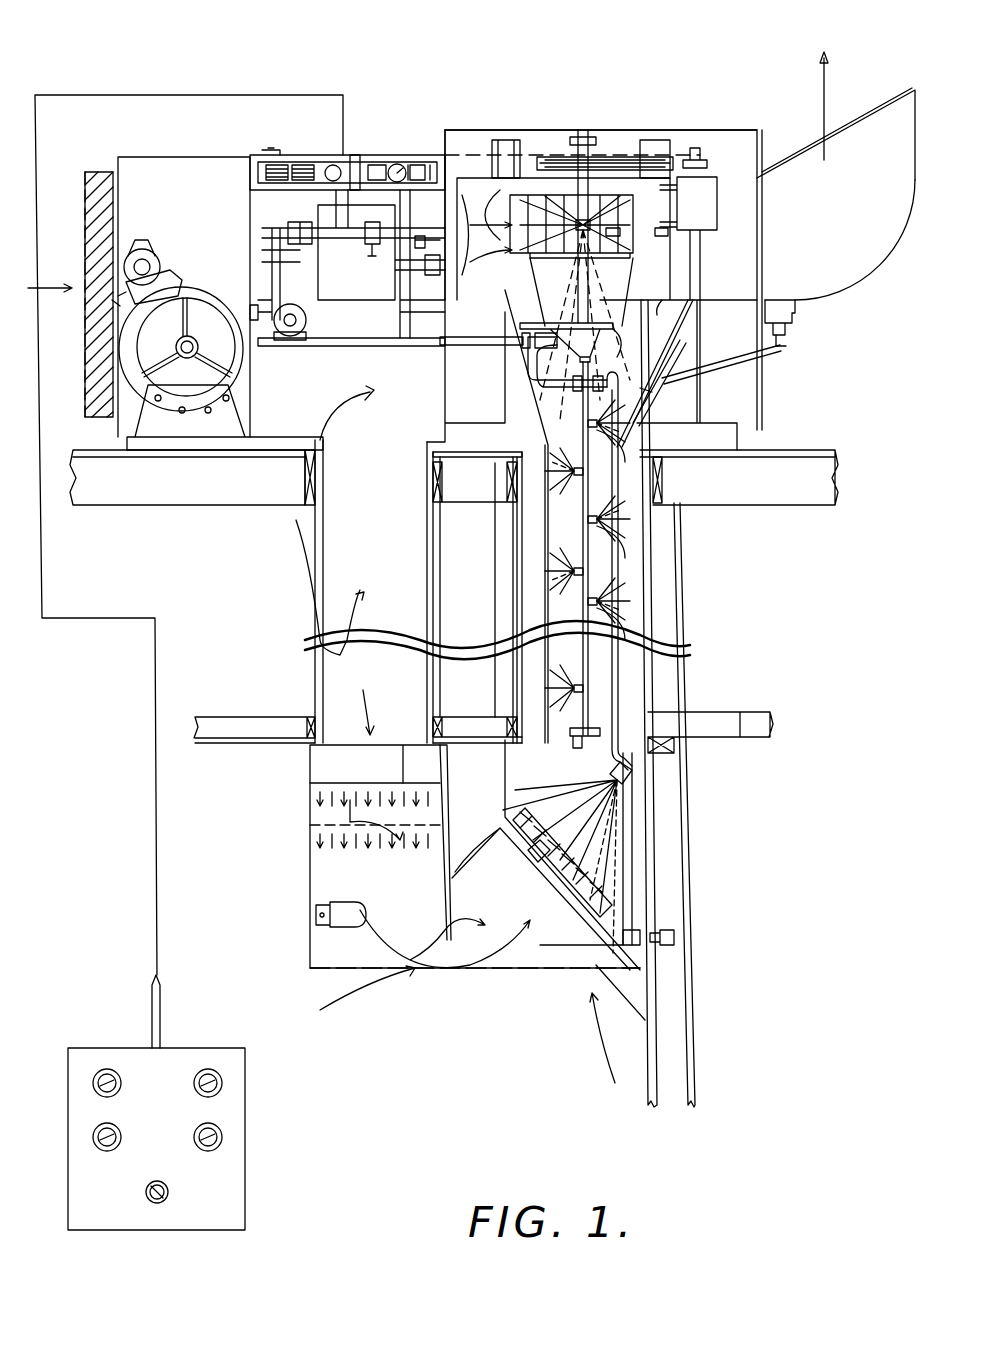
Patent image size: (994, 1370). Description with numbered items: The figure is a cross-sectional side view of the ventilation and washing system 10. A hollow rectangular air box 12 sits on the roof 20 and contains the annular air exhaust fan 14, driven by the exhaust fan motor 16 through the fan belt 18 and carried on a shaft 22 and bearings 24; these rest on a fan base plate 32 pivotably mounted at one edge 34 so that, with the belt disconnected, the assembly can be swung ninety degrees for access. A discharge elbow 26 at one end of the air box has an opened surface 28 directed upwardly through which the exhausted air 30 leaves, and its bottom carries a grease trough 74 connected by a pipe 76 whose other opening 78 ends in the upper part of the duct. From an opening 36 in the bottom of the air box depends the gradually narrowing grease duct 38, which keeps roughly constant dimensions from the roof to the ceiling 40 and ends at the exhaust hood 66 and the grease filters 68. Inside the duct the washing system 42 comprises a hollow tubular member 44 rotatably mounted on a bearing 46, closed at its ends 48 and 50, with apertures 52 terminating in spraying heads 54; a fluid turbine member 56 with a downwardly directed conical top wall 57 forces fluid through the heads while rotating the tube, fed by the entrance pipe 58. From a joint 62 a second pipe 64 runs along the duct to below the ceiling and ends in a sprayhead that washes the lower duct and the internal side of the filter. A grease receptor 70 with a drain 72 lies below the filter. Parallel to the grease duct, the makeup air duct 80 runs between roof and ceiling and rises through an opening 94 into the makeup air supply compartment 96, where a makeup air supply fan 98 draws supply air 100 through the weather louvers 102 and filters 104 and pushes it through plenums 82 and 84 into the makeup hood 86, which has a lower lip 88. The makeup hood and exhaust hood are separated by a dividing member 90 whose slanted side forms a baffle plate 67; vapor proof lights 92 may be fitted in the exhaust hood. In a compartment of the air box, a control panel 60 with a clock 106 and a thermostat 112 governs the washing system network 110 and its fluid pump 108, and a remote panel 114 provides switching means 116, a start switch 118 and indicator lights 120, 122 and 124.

The ventilation and washing system 10 is at (542, 60).
The air box 12 is at (688, 128).
The air exhaust fan 14 is at (487, 236).
The exhaust fan motor 16 is at (702, 222).
The fan belt 18 is at (644, 165).
The roof 20 is at (112, 455).
The shaft 22 is at (548, 156).
The bearings 24 is at (588, 145).
The discharge elbow 26 is at (912, 262).
The opened surface 28 is at (862, 108).
The exhausted air 30 is at (824, 72).
The fan base plate 32 is at (516, 160).
The edge 34 is at (480, 170).
The opening 36 is at (700, 332).
The grease duct 38 is at (530, 406).
The ceiling 40 is at (215, 740).
The washing system 42 is at (588, 308).
The hollow tubular member 44 is at (577, 450).
The bearing 46 is at (600, 730).
The end 48 is at (600, 775).
The end 50 is at (598, 218).
The apertures 52 is at (612, 532).
The spraying heads 54 is at (612, 232).
The fluid turbine member 56 is at (522, 378).
The conical top wall 57 is at (616, 326).
The entrance pipe 58 is at (470, 338).
The control panel 60 is at (275, 155).
The joint 62 is at (550, 328).
The second pipe 64 is at (688, 672).
The exhaust hood 66 is at (512, 900).
The baffle plate 67 is at (478, 852).
The grease filters 68 is at (578, 905).
The grease receptor 70 is at (655, 915).
The drain 72 is at (665, 948).
The grease trough 74 is at (796, 322).
The pipe 76 is at (721, 364).
The opening 78 is at (644, 400).
The makeup air duct 80 is at (320, 568).
The hood makeup air plenum 82 is at (310, 770).
The hood makeup air plenum 84 is at (310, 816).
The makeup hood 86 is at (310, 872).
The lip 88 is at (352, 968).
The dividing member 90 is at (445, 935).
The vapor proof lights 92 is at (345, 903).
The opening 94 is at (252, 414).
The makeup air supply compartment 96 is at (182, 232).
The makeup air supply fan 98 is at (218, 296).
The supply air 100 is at (30, 288).
The weather louvers 102 is at (85, 415).
The filters 104 is at (98, 175).
The clock 106 is at (397, 164).
The fluid pump 108 is at (292, 338).
The washing system network 110 is at (283, 222).
The thermostat 112 is at (356, 154).
The remote panel 114 is at (256, 1177).
The switching means 116 is at (156, 1204).
The start switch 118 is at (222, 1133).
The indicator light 120 is at (98, 1148).
The indicator light 122 is at (106, 1080).
The indicator light 124 is at (210, 1080).